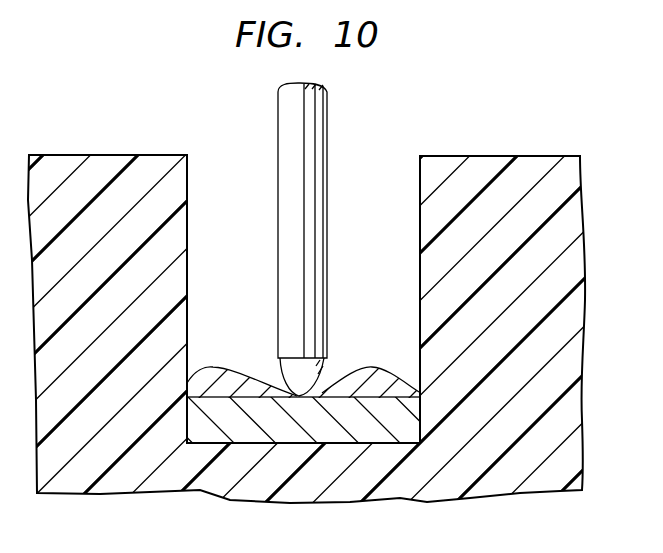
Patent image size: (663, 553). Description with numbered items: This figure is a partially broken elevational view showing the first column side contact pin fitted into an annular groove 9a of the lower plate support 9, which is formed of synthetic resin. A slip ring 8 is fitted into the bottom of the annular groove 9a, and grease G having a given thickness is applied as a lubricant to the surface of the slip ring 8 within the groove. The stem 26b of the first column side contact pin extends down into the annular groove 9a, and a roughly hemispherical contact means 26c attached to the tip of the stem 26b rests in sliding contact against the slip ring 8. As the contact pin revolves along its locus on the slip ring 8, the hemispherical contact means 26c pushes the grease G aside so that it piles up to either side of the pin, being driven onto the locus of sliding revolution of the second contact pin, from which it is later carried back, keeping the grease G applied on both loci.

The lower plate support 9 is at (503, 172).
The annular groove 9a is at (312, 430).
The slip ring 8 is at (406, 425).
The grease G is at (377, 375).
The stem 26b is at (328, 141).
The first roughly hemispherical contact means 26c is at (286, 373).